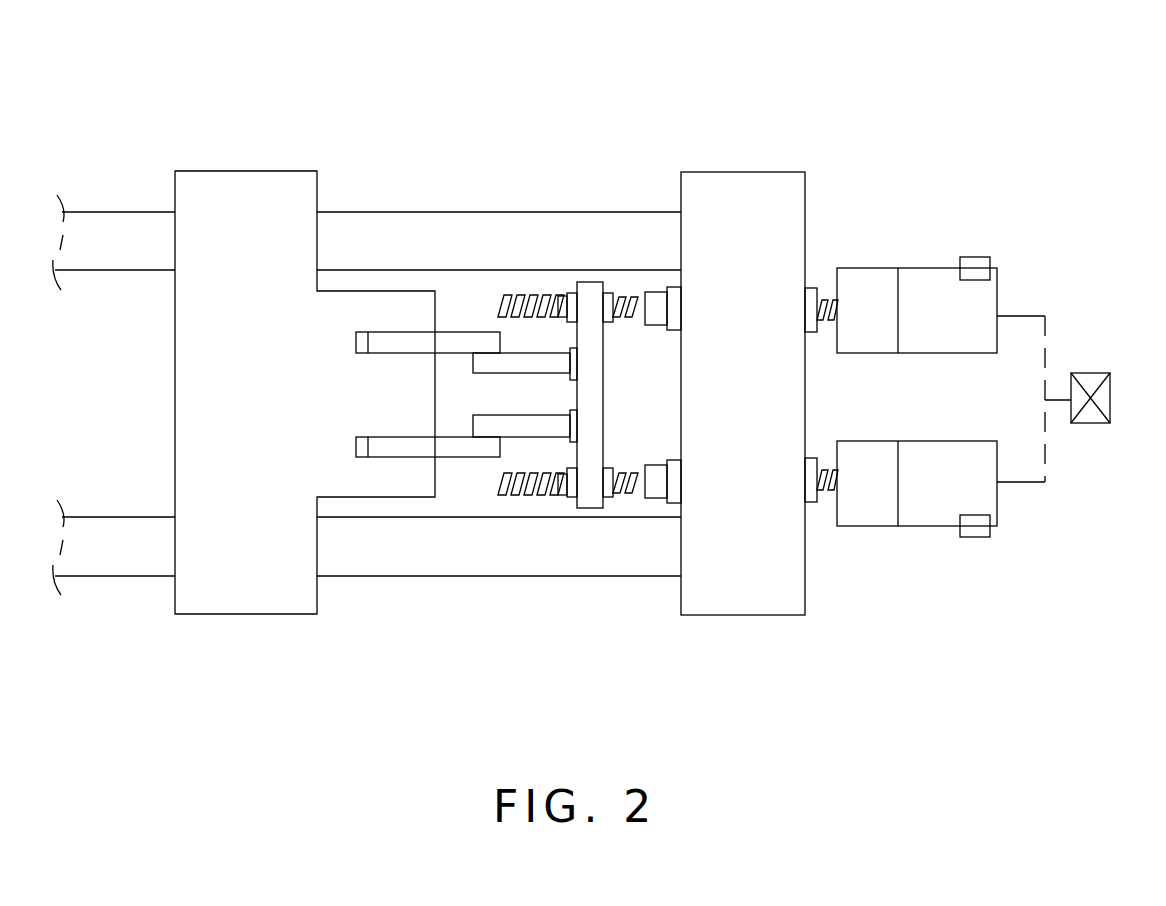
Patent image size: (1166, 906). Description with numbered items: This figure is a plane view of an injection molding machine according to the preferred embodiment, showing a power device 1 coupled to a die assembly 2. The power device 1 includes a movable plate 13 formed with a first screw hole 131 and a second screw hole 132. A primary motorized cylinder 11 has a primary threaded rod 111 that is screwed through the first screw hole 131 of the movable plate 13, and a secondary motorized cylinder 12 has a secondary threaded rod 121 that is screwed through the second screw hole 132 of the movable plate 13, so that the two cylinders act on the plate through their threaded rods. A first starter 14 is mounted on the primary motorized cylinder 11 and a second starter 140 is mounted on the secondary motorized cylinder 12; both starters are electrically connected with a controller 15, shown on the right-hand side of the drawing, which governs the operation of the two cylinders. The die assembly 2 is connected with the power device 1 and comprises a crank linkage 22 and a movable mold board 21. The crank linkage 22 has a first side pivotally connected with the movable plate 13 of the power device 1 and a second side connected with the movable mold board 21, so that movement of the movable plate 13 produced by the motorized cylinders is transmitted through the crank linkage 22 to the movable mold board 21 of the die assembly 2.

The power device 1 is at (982, 132).
The die assembly 2 is at (350, 76).
The movable mold board 21 is at (246, 232).
The crank linkage 22 is at (462, 342).
The movable plate 13 is at (590, 303).
The first screw hole 131 is at (557, 297).
The second screw hole 132 is at (555, 487).
The primary threaded rod 111 is at (643, 303).
The secondary threaded rod 121 is at (633, 488).
The primary motorized cylinder 11 is at (850, 285).
The secondary motorized cylinder 12 is at (850, 510).
The first starter 14 is at (970, 270).
The second starter 140 is at (977, 525).
The controller 15 is at (1095, 385).